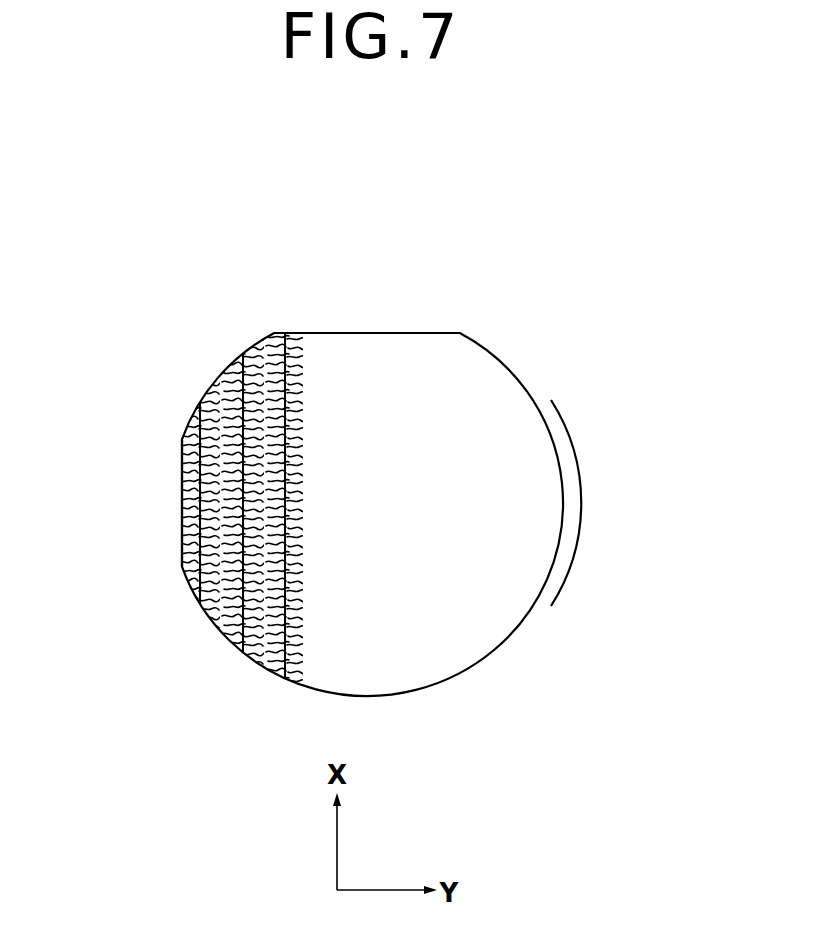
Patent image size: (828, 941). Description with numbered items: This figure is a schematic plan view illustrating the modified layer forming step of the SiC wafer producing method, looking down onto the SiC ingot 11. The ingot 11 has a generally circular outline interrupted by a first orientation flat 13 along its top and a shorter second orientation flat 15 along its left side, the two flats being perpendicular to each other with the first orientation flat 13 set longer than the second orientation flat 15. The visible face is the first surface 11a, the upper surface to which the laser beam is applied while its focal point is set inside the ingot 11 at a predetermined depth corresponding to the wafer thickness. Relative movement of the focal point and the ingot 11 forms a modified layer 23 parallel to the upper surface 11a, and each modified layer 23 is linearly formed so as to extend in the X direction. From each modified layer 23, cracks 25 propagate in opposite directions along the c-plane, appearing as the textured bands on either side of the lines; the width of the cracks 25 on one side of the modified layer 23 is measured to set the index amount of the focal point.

The SiC ingot 11 is at (546, 390).
The first surface 11a is at (532, 522).
The first orientation flat 13 is at (358, 333).
The second orientation flat 15 is at (182, 510).
The modified layer 23 is at (262, 349).
The cracks 25 is at (303, 420).